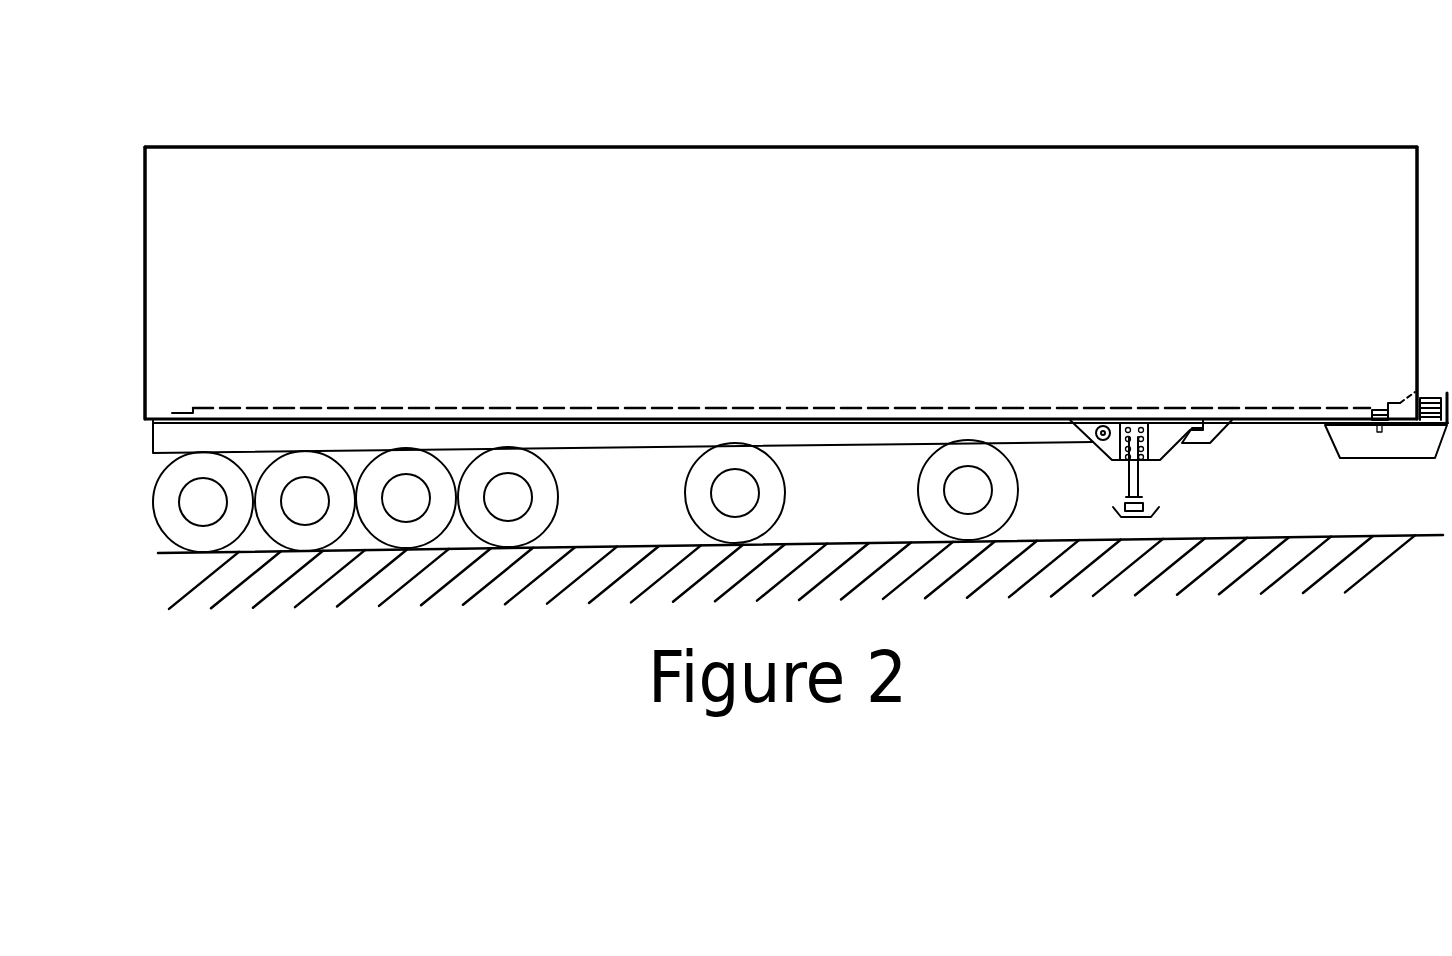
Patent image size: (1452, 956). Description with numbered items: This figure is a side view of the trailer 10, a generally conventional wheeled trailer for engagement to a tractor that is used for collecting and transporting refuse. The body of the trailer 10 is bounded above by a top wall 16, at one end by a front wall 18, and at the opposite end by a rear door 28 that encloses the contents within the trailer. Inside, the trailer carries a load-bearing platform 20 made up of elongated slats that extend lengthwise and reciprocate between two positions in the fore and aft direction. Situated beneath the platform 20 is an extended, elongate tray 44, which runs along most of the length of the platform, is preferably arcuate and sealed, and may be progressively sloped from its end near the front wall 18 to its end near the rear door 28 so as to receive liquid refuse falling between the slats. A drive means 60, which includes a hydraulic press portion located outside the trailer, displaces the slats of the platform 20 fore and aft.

The trailer 10 is at (582, 100).
The top wall 16 is at (1117, 147).
The front wall 18 is at (1418, 290).
The load-bearing platform 20 is at (992, 408).
The rear door 28 is at (145, 220).
The elongate tray 44 is at (620, 433).
The drive means 60 is at (1400, 448).